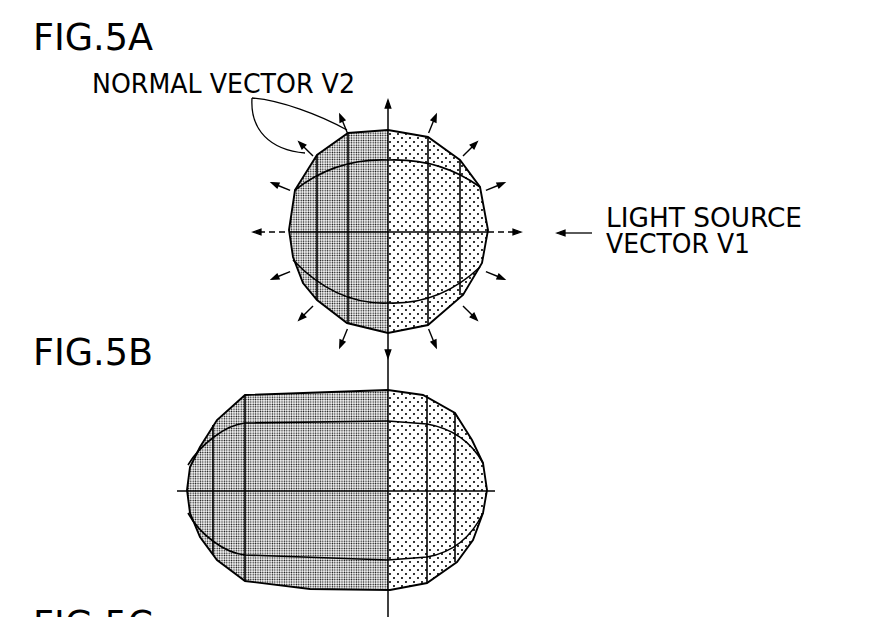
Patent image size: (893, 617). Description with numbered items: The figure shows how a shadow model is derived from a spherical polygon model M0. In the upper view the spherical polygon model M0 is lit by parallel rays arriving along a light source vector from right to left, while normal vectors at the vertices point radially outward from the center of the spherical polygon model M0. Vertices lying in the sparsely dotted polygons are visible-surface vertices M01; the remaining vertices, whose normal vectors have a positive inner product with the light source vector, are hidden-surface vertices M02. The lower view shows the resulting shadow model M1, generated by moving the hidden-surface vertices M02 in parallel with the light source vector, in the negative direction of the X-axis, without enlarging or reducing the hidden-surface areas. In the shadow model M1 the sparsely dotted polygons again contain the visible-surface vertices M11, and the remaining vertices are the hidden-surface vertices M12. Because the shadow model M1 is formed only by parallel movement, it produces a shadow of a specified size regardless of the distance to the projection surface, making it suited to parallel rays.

In FIG. 5A, the spherical polygon model M0 is at (490, 297).
In FIG. 5A, the visible-surface vertices M01 is at (465, 232).
In FIG. 5A, the hidden-surface vertices M02 is at (295, 190).
In FIG. 5B, the shadow model M1 is at (467, 572).
In FIG. 5B, the visible-surface vertices M11 is at (460, 490).
In FIG. 5B, the hidden-surface vertices M12 is at (200, 443).